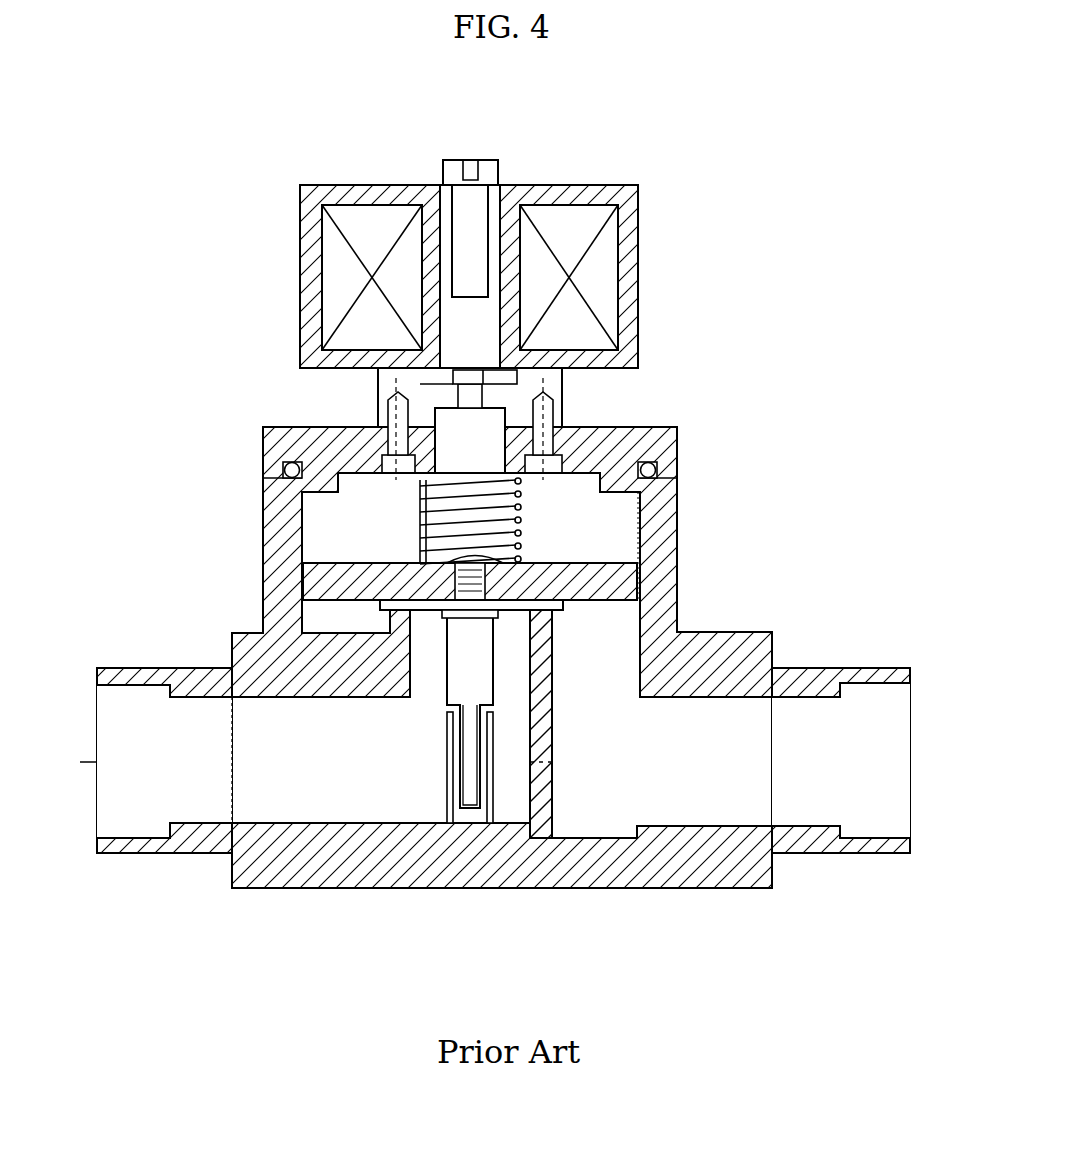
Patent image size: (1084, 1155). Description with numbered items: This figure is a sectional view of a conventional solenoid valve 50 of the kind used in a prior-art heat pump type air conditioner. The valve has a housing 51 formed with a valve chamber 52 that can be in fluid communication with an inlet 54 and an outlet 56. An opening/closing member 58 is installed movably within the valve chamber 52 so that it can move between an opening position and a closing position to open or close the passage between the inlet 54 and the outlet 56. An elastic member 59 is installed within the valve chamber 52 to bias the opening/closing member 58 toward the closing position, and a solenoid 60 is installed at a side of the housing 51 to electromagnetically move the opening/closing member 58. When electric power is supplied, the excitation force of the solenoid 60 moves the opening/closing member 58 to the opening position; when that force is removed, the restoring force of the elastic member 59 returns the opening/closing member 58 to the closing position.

The solenoid valve (prior art) 50 is at (495, 559).
The housing 51 is at (667, 568).
The valve chamber 52 is at (615, 532).
The inlet 54 is at (673, 798).
The outlet 56 is at (345, 798).
The opening/closing member 58 is at (310, 584).
The elastic member 59 is at (413, 522).
The solenoid 60 is at (633, 225).